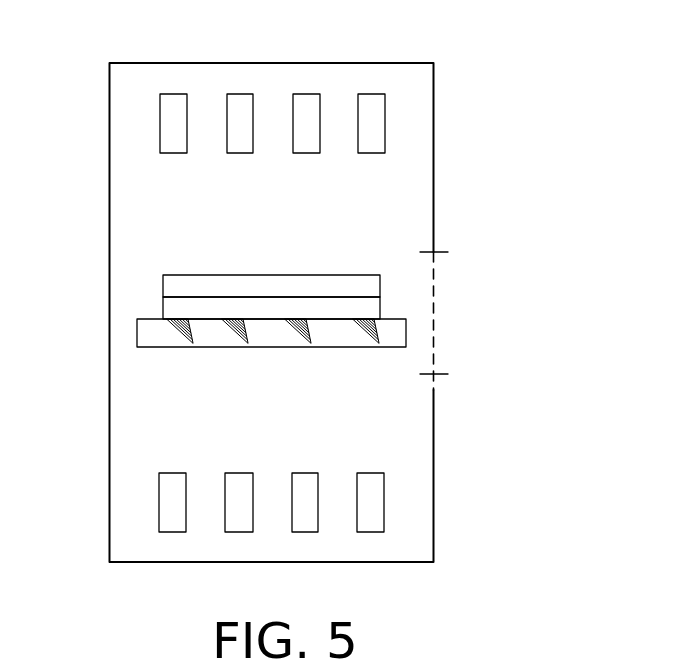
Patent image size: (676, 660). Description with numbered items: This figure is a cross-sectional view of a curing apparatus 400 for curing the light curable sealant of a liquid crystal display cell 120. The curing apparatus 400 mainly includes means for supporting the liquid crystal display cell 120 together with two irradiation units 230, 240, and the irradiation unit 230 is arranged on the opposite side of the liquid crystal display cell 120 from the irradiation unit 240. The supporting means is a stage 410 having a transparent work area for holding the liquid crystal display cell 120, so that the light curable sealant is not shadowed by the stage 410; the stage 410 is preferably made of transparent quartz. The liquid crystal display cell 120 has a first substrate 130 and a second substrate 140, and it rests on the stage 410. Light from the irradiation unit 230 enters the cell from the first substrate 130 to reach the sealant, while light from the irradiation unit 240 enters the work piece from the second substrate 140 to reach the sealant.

The curing apparatus 400 is at (70, 72).
The irradiation unit 230 is at (241, 93).
The irradiation unit 240 is at (373, 537).
The liquid crystal display cell 120 is at (358, 265).
The second substrate 140 is at (272, 287).
The first substrate 130 is at (368, 304).
The stage 410 is at (395, 331).